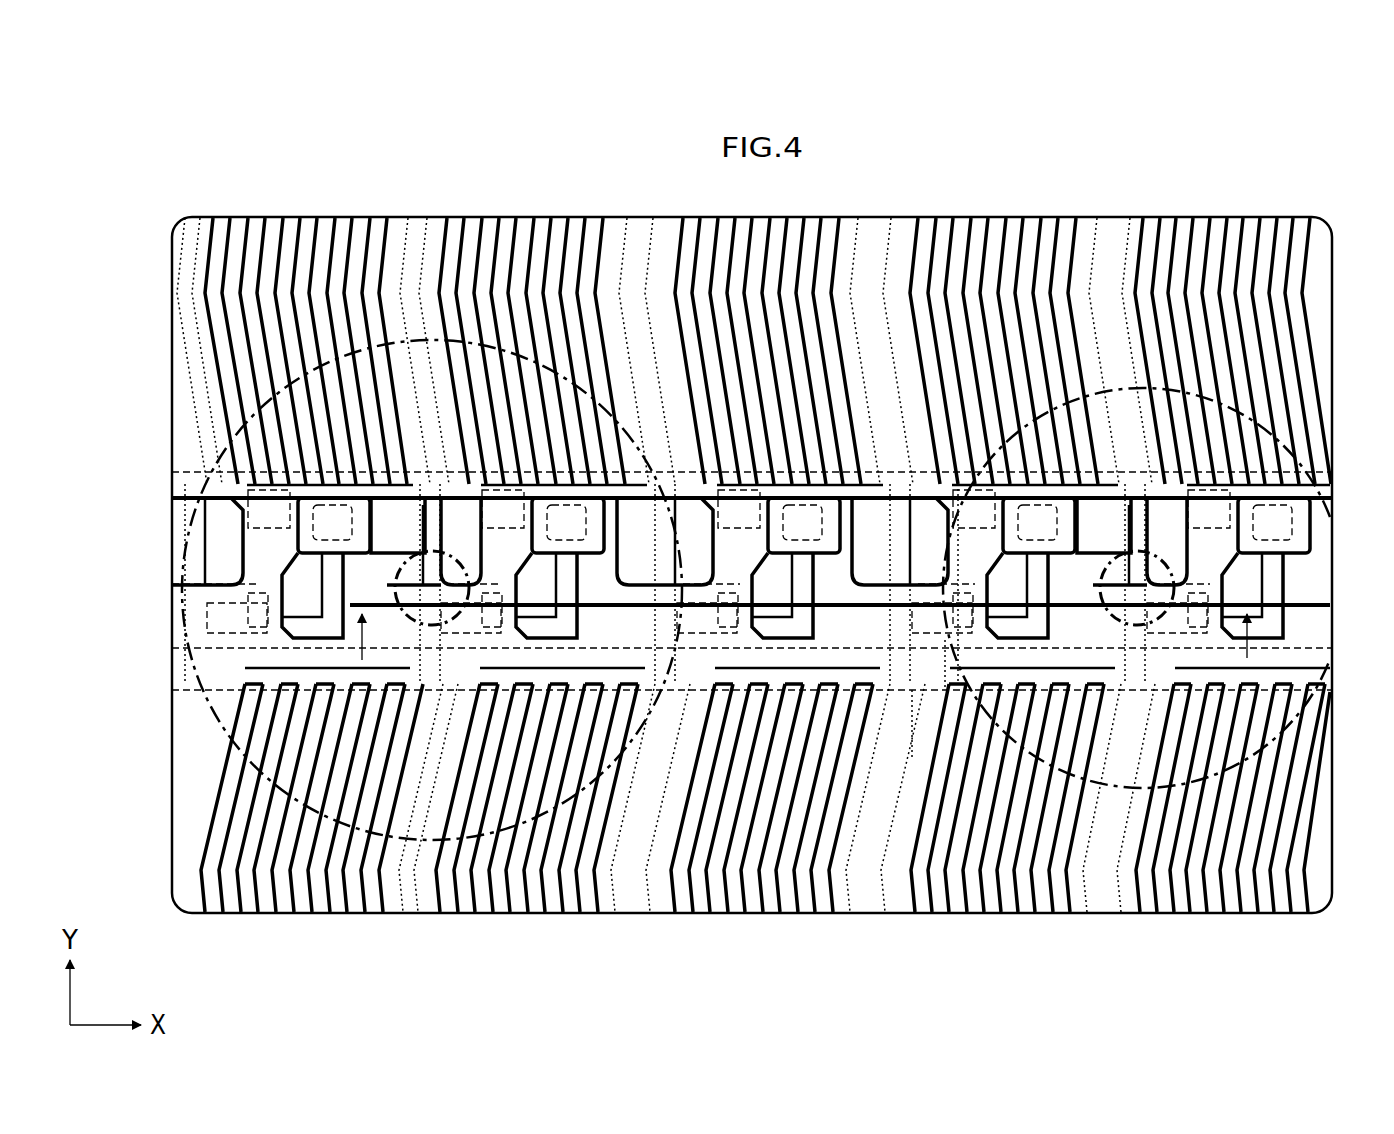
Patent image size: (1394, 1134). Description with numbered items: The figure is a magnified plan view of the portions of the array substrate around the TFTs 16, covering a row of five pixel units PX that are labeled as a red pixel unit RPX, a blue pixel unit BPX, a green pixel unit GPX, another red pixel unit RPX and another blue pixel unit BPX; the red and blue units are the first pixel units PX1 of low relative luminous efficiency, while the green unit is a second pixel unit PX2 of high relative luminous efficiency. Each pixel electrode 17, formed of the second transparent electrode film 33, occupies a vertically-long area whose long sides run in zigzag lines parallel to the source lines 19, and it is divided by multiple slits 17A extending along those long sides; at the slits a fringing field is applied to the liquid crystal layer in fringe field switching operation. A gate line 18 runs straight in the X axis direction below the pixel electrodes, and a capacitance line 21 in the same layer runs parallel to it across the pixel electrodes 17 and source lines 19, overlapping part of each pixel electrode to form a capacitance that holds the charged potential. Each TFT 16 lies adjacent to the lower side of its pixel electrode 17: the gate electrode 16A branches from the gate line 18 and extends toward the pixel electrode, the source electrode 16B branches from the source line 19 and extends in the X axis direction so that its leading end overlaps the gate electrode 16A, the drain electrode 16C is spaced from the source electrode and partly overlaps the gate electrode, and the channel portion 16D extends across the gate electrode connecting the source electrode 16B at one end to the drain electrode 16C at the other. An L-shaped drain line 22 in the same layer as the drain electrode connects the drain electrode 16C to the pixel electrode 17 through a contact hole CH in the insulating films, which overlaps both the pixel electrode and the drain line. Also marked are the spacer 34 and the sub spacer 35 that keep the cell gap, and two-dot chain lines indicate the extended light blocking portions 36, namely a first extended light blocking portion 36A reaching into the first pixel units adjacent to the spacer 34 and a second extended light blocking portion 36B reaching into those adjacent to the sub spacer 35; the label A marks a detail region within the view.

The pixel electrode 17 is at (210, 272).
The second transparent electrode film 33 is at (765, 301).
The slit 17A is at (515, 248).
The source line 19 is at (389, 262).
The TFT 16 is at (935, 562).
The gate electrode 16A is at (958, 488).
The source electrode 16B is at (905, 802).
The drain electrode 16C is at (945, 692).
The channel portion 16D is at (912, 742).
The capacitance line 21 is at (265, 460).
The drain line 22 is at (580, 586).
The contact hole CH is at (552, 288).
The spacer 34 is at (395, 586).
The sub spacer 35 is at (1176, 590).
The extended light blocking portion 36 is at (756, 568).
The first extended light blocking portion 36A is at (390, 345).
The second extended light blocking portion 36B is at (1105, 392).
The gate line 18 is at (255, 717).
The region A is at (804, 649).
The pixel unit PX is at (774, 846).
The first pixel unit PX1 is at (774, 846).
The second pixel unit PX2 is at (797, 840).
The red pixel unit RPX is at (265, 866).
The blue pixel unit BPX is at (500, 866).
The green pixel unit GPX is at (775, 866).